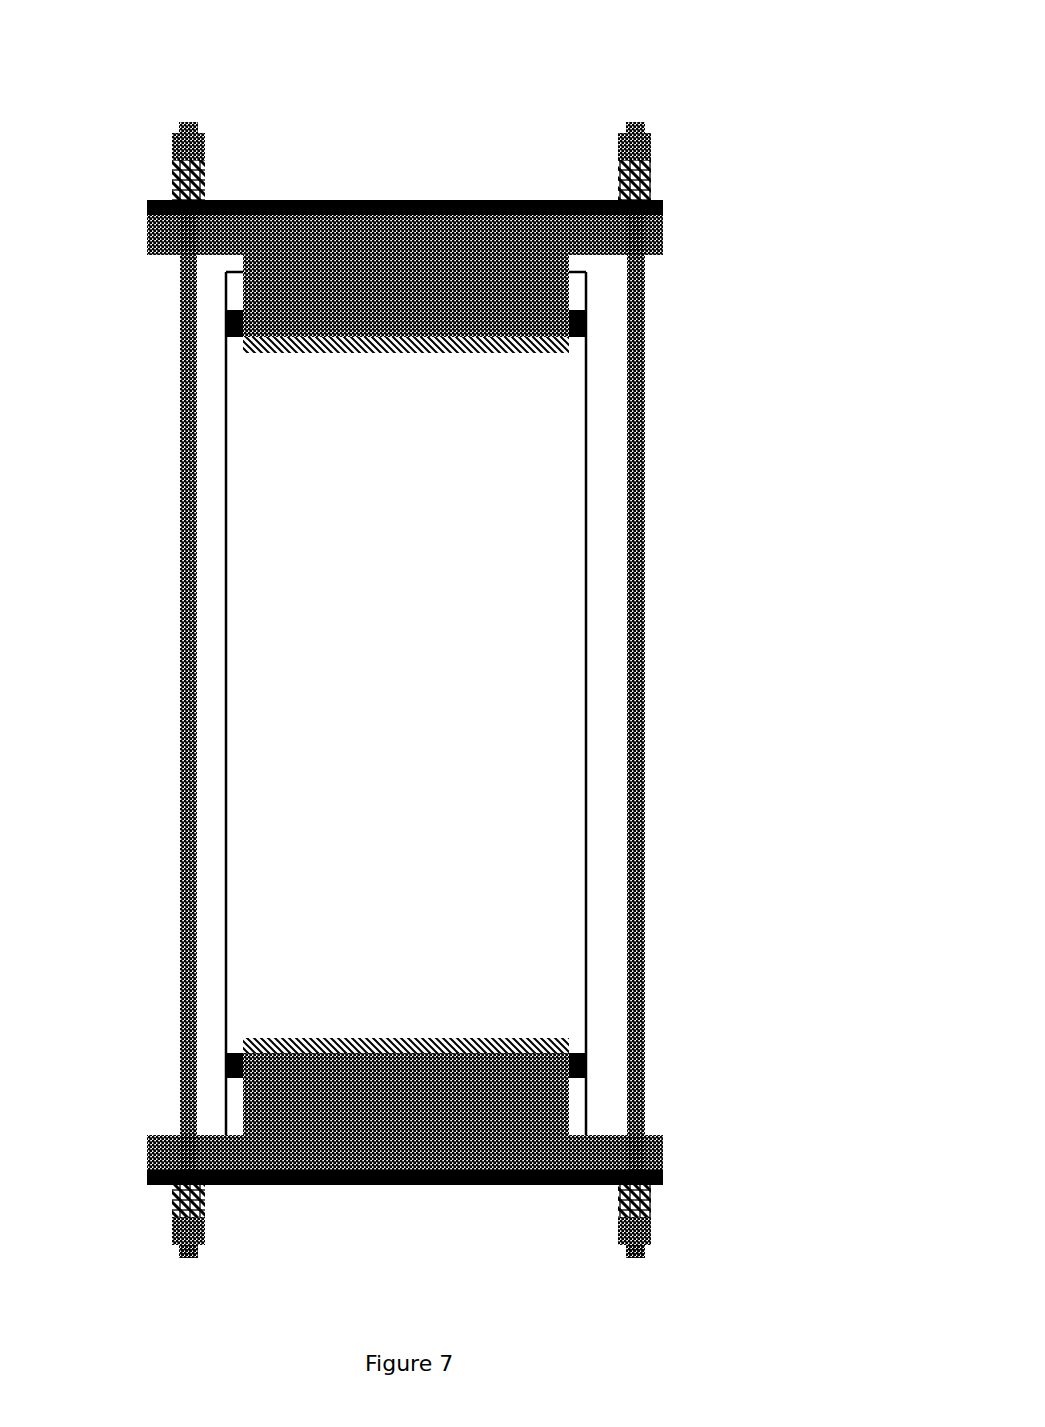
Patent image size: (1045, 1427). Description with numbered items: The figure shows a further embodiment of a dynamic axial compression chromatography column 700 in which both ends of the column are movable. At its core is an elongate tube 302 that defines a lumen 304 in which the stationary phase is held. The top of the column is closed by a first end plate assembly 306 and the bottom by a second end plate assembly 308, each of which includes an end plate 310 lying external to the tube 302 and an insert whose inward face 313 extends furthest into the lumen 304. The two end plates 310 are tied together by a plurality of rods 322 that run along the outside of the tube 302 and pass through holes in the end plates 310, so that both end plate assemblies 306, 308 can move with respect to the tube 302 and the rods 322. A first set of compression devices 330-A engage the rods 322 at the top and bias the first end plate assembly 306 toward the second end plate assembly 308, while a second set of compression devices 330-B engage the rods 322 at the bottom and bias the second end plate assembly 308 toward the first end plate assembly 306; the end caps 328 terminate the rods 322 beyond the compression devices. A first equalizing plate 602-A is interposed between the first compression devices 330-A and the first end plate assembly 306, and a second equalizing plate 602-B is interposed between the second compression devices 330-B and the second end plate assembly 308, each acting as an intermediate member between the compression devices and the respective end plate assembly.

The chromatography column 700 is at (774, 80).
The tube 302 is at (586, 720).
The lumen 304 is at (500, 564).
The first end plate assembly 306 is at (407, 183).
The second end plate assembly 308 is at (695, 1141).
The end plate 310 is at (663, 238).
The inward face 313 is at (342, 353).
The rods 322 is at (180, 562).
The rod end cap 328 is at (650, 133).
The first set of compression devices 330-A is at (175, 184).
The second set of compression devices 330-B is at (172, 1200).
The first equalizing plate 602-A is at (215, 200).
The second equalizing plate 602-B is at (255, 1185).